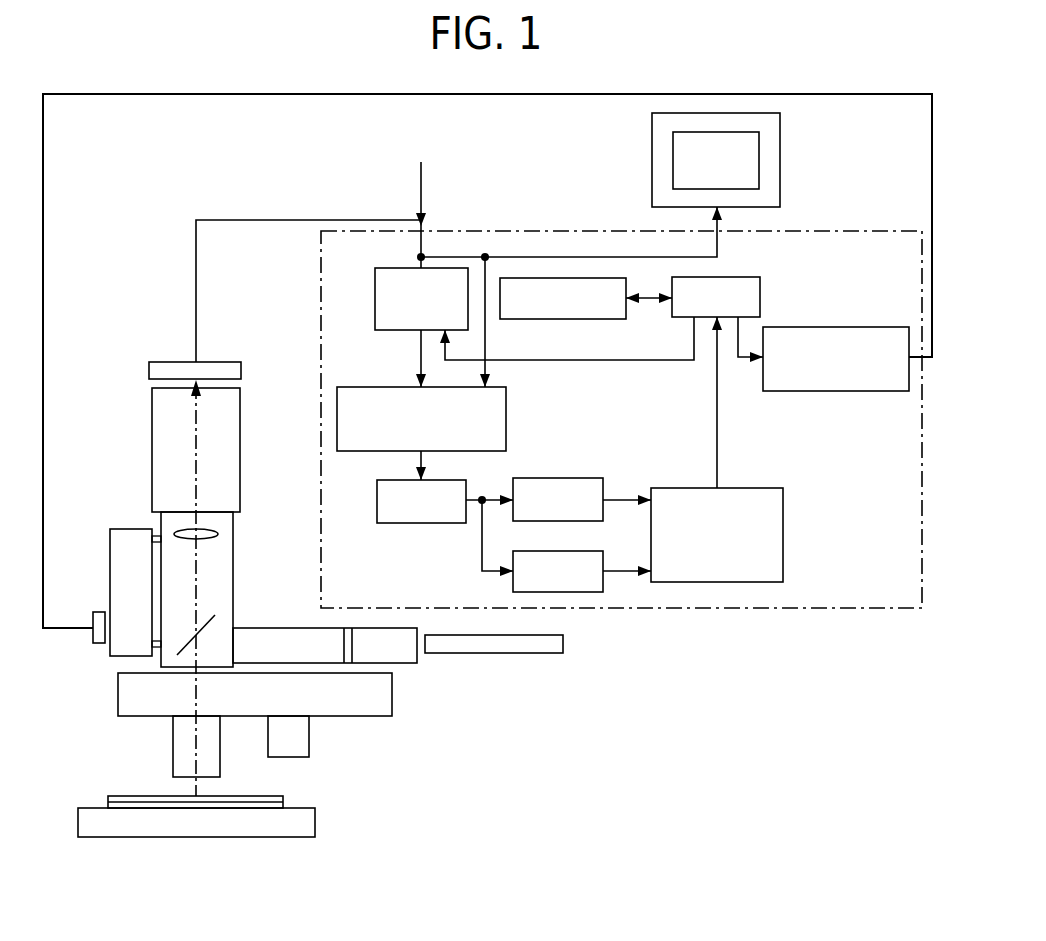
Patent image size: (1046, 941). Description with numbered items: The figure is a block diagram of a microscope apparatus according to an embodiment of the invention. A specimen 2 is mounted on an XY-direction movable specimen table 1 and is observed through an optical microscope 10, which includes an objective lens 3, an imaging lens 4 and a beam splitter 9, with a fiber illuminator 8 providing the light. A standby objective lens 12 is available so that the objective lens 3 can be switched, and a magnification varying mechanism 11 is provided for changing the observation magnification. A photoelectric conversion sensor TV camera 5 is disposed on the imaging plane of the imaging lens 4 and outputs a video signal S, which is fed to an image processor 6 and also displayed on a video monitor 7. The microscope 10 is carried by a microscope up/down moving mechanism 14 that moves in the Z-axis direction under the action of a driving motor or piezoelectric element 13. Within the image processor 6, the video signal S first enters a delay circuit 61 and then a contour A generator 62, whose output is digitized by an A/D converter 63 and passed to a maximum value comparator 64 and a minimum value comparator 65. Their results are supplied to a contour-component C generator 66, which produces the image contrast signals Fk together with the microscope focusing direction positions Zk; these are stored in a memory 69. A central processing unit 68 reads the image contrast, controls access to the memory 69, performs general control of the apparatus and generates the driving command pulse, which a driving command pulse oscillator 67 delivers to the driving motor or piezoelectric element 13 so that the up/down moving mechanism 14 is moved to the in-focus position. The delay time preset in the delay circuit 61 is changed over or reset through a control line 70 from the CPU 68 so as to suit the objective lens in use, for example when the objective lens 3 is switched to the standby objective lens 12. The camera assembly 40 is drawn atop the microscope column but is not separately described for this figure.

The XY-direction movable specimen table 1 is at (305, 820).
The specimen 2 is at (138, 797).
The objective lens 3 is at (173, 745).
The imaging lens 4 is at (212, 539).
The photoelectric conversion sensor TV camera 5 is at (167, 368).
The image processor 6 is at (820, 608).
The video monitor 7 is at (780, 166).
The fiber illuminator 8 is at (563, 643).
The beam splitter 9 is at (205, 628).
The optical microscope 10 is at (220, 525).
The magnification varying mechanism 11 is at (118, 698).
The standby objective lens 12 is at (300, 736).
The driving motor or piezoelectric element 13 is at (92, 610).
The microscope up/down moving mechanism 14 is at (127, 529).
The camera 40 is at (248, 392).
The delay circuit 61 is at (375, 318).
The contour A generator 62 is at (388, 386).
The A/D converter 63 is at (377, 507).
The maximum value comparator 64 is at (570, 478).
The minimum value comparator 65 is at (585, 551).
The contour-component C generator 66 is at (783, 520).
The driving command pulse oscillator 67 is at (868, 391).
The central processing unit 68 is at (760, 300).
The memory 69 is at (555, 320).
The control line 70 is at (625, 360).
The image signal S is at (419, 199).